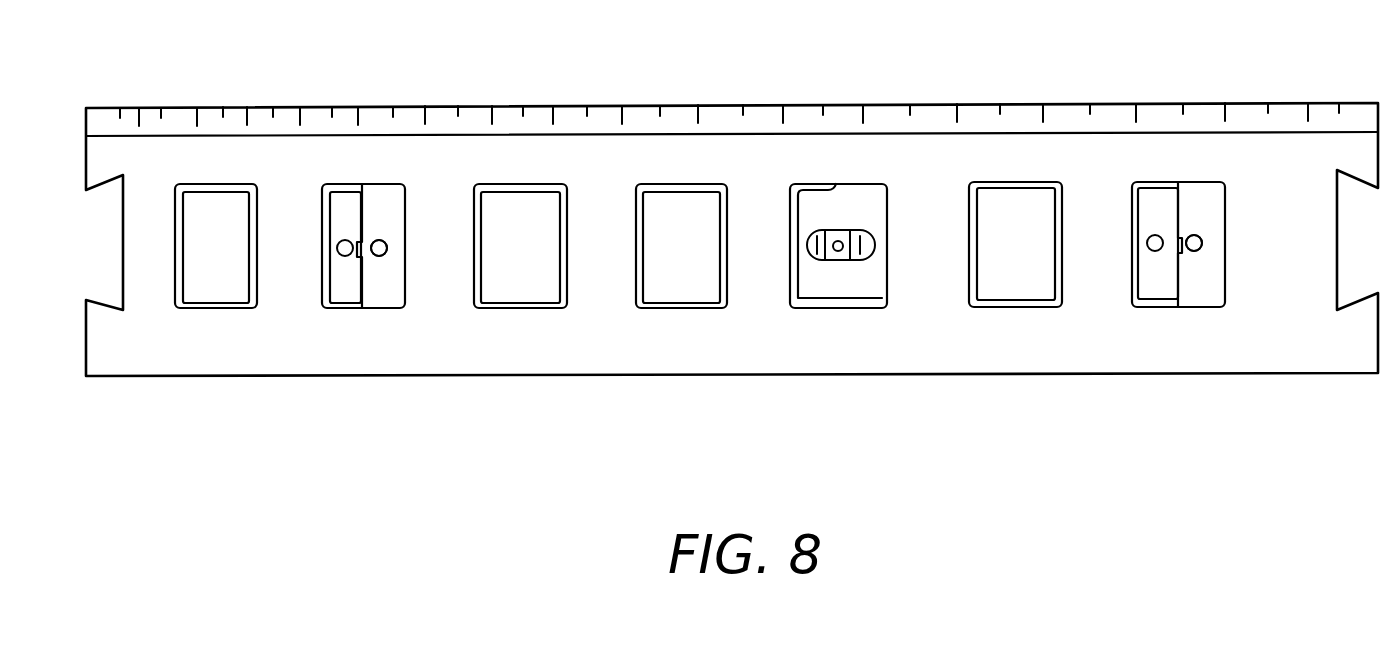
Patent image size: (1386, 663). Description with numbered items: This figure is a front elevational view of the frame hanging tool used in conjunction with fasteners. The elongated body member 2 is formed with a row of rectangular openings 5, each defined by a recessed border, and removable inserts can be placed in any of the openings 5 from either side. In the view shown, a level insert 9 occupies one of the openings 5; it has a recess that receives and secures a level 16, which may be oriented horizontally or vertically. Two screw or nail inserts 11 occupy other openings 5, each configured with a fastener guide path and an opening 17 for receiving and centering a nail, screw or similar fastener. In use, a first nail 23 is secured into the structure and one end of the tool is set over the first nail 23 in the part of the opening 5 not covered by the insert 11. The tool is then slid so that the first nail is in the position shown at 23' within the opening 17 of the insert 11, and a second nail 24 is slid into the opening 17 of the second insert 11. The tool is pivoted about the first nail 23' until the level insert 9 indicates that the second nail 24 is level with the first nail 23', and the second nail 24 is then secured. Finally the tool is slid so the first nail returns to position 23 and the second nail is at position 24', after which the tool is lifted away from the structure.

The body member 2 is at (1337, 360).
The openings 5 is at (343, 297).
The level insert 9 is at (863, 308).
The screw or nail insert 11 is at (382, 300).
The level 16 is at (838, 258).
The opening 17 is at (379, 240).
The first nail 23 is at (351, 154).
The first nail (slid position) 23' is at (416, 212).
The second nail 24 is at (1227, 157).
The second nail (slid position) 24' is at (1158, 157).